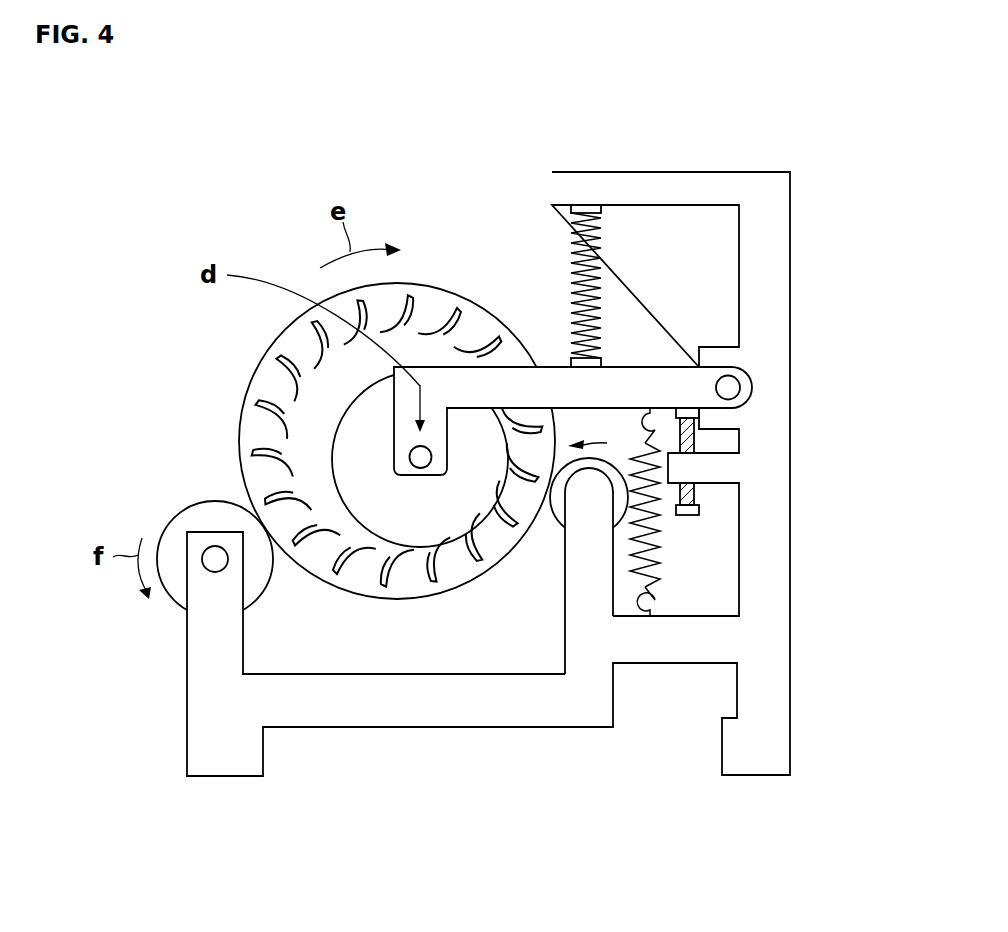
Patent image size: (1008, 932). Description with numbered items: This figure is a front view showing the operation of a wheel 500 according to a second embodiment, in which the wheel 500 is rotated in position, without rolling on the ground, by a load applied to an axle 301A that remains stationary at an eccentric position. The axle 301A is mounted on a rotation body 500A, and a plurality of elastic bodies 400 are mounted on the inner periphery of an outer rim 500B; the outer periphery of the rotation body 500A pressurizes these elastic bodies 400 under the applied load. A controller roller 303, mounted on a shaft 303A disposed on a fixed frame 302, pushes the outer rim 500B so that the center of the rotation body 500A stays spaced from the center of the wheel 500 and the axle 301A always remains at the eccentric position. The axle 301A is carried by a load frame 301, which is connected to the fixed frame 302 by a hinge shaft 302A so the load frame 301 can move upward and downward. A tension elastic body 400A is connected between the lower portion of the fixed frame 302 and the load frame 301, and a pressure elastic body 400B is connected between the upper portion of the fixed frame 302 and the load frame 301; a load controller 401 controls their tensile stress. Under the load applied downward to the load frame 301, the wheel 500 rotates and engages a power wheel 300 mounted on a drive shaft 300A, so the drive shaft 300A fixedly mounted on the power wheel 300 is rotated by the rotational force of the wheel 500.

The power wheel 300 is at (160, 537).
The drive shaft 300A is at (213, 550).
The load frame 301 is at (553, 366).
The axle 301A is at (410, 456).
The fixed frame 302 is at (187, 703).
The hinge shaft 302A is at (740, 382).
The controller roller 303 is at (616, 522).
The shaft 303A is at (589, 500).
The elastic body 400 is at (402, 553).
The tension elastic body 400A is at (662, 558).
The pressure elastic body 400B is at (570, 262).
The load controller 401 is at (699, 508).
The wheel 500 is at (343, 529).
The rotation body 500A is at (307, 452).
The outer rim of the wheel 500B is at (316, 567).